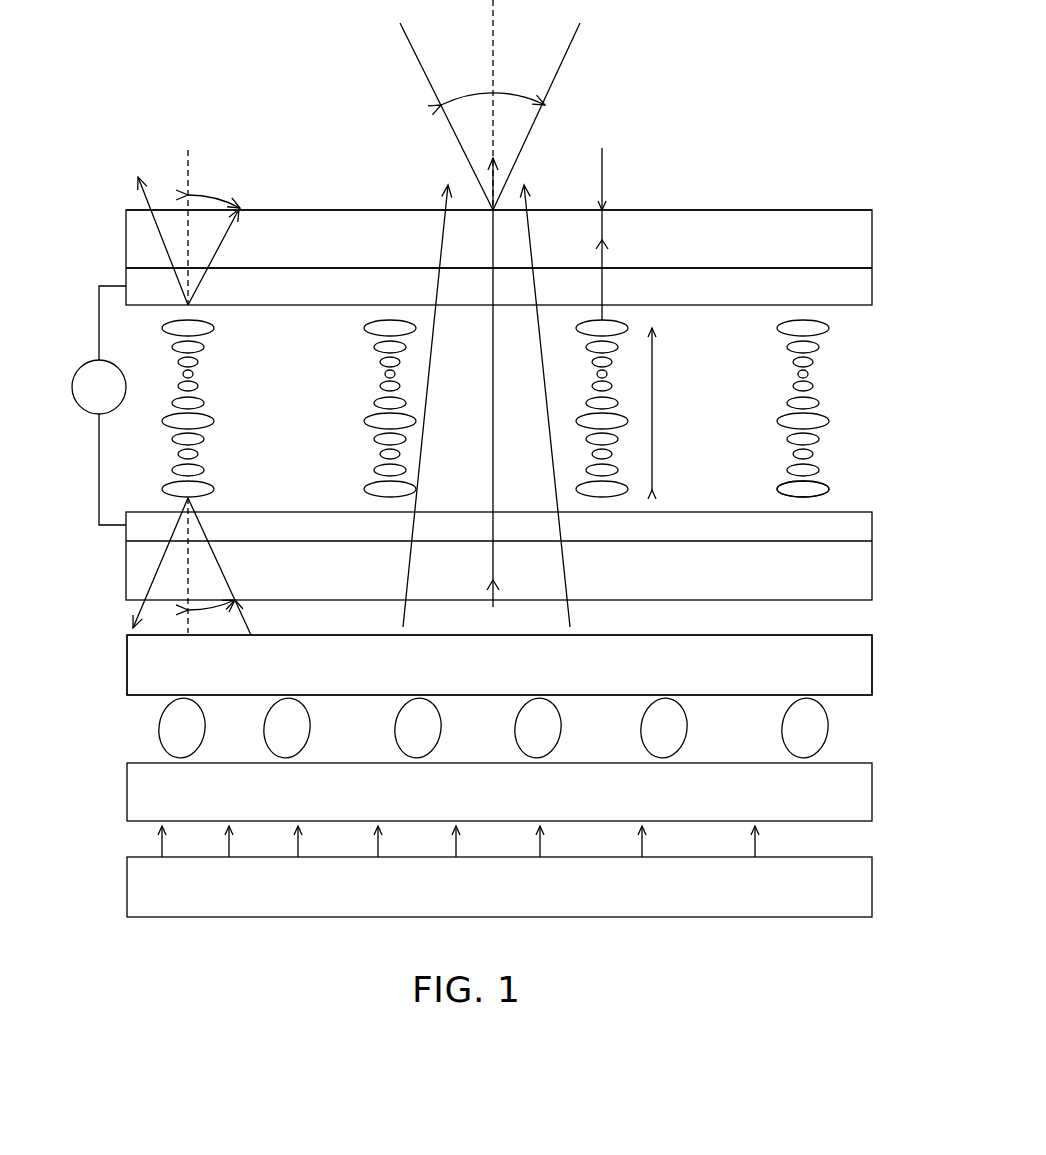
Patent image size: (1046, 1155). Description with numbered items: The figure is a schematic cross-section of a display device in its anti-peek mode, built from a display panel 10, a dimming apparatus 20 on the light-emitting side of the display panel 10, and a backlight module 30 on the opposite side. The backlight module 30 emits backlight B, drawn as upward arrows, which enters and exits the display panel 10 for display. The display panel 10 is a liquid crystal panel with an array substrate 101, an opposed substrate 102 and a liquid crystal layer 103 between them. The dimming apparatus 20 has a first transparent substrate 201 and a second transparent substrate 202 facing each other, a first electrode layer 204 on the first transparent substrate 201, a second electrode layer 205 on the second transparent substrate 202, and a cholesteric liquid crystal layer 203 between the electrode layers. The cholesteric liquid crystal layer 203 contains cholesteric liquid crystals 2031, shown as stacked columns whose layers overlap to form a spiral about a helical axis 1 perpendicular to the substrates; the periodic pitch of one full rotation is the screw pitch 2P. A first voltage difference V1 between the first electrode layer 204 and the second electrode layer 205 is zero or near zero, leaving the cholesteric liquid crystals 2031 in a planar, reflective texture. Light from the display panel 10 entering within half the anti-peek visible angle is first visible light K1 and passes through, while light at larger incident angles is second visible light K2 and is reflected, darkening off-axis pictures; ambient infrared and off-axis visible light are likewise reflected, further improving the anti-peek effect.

The dimming apparatus 20 is at (108, 212).
The display panel 10 is at (108, 632).
The backlight module 30 is at (108, 852).
The second transparent substrate 202 is at (855, 246).
The second electrode layer 205 is at (855, 286).
The cholesteric liquid crystal layer 203 is at (873, 322).
The cholesteric liquid crystals 2031 is at (812, 494).
The first electrode layer 204 is at (855, 527).
The first transparent substrate 201 is at (855, 572).
The opposed substrate 102 is at (855, 672).
The liquid crystal layer 103 is at (815, 733).
The array substrate 101 is at (855, 797).
The backlight B is at (758, 848).
The first voltage difference V1 is at (99, 405).
The first visible light K1 is at (568, 605).
The second visible light K2 is at (250, 619).
The helical axis 1 is at (186, 601).
The screw pitch 2P is at (678, 409).